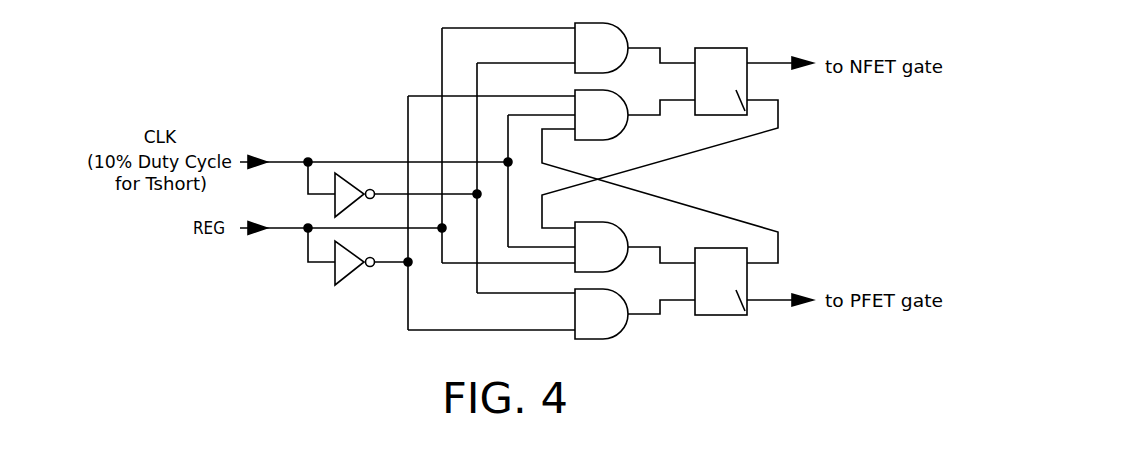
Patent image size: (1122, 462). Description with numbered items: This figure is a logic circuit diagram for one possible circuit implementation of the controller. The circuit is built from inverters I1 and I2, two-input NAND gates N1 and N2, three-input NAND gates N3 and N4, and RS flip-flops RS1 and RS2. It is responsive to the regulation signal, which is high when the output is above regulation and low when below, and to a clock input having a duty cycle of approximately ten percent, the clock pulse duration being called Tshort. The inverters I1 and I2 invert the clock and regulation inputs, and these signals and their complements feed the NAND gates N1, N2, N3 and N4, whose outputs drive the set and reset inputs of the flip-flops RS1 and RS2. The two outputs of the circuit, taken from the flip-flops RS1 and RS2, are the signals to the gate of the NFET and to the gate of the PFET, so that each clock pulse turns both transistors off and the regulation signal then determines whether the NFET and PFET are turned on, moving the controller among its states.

The two input NAND gate N1 is at (601, 48).
The two input NAND gate N2 is at (601, 314).
The three input NAND gate N3 is at (601, 115).
The three input NAND gate N4 is at (601, 247).
The inverter I1 is at (355, 195).
The inverter I2 is at (355, 263).
The RS flip-flop RS1 is at (721, 81).
The RS flip-flop RS2 is at (721, 281).